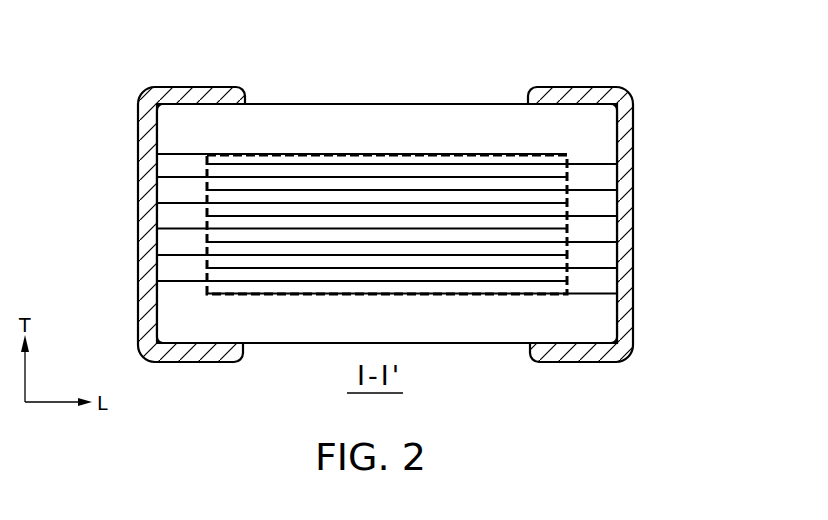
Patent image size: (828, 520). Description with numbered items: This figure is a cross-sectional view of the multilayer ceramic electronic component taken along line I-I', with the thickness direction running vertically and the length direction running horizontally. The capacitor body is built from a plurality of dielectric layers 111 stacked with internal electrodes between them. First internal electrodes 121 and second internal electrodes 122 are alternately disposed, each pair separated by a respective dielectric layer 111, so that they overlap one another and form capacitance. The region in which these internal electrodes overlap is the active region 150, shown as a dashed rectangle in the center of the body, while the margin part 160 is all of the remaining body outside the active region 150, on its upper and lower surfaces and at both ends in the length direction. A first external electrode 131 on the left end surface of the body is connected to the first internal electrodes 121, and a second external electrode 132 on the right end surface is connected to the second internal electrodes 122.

The dielectric layer 111 is at (555, 226).
The first internal electrode 121 is at (180, 203).
The second internal electrode 122 is at (218, 216).
The first external electrode 131 is at (198, 87).
The second external electrode 132 is at (583, 96).
The active region 150 is at (584, 177).
The margin part 160 is at (393, 134).